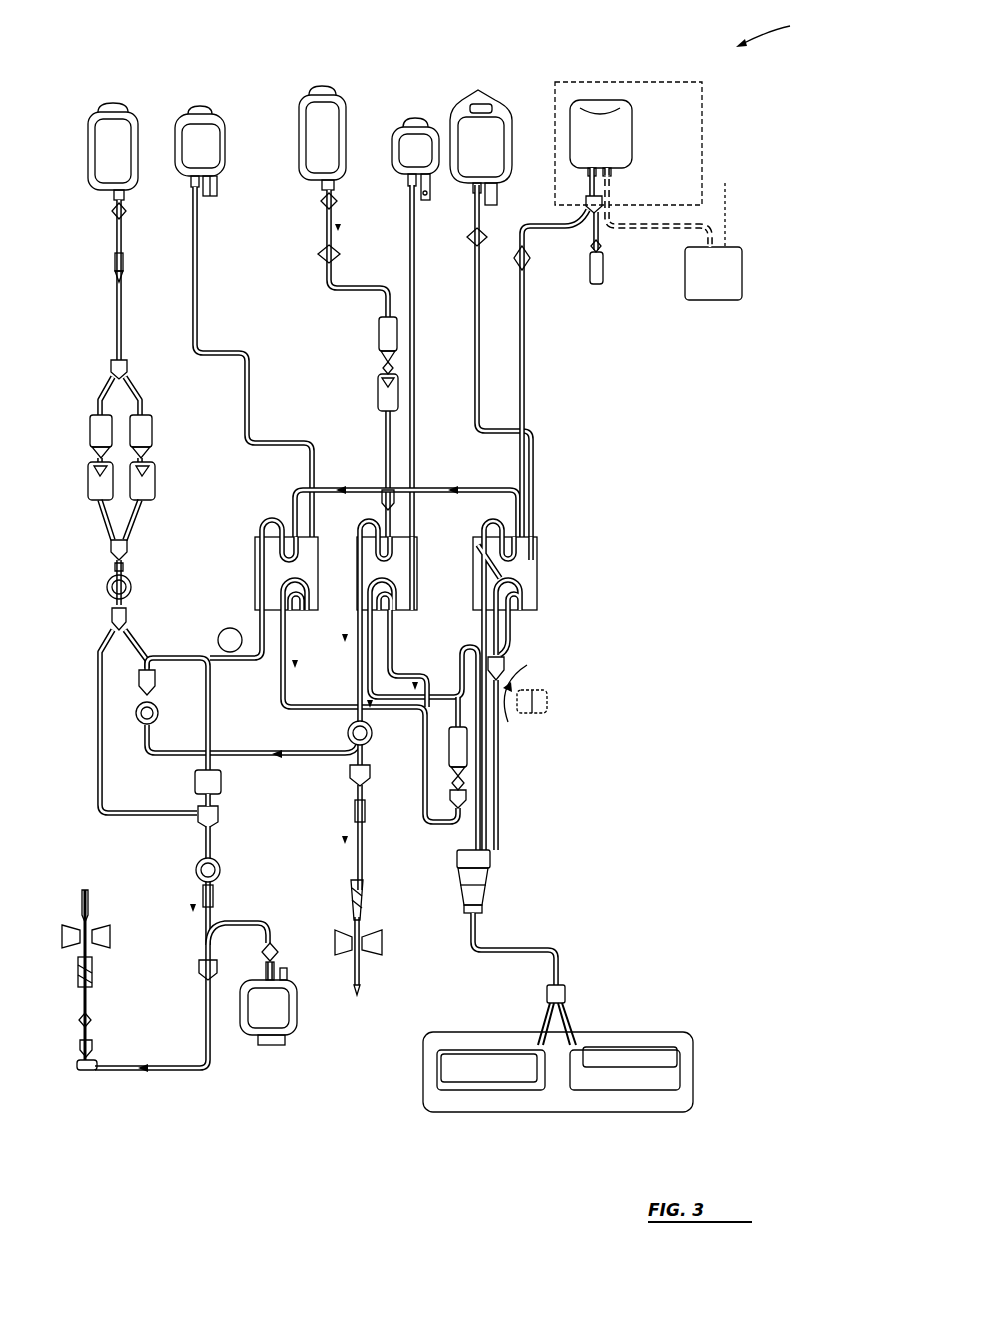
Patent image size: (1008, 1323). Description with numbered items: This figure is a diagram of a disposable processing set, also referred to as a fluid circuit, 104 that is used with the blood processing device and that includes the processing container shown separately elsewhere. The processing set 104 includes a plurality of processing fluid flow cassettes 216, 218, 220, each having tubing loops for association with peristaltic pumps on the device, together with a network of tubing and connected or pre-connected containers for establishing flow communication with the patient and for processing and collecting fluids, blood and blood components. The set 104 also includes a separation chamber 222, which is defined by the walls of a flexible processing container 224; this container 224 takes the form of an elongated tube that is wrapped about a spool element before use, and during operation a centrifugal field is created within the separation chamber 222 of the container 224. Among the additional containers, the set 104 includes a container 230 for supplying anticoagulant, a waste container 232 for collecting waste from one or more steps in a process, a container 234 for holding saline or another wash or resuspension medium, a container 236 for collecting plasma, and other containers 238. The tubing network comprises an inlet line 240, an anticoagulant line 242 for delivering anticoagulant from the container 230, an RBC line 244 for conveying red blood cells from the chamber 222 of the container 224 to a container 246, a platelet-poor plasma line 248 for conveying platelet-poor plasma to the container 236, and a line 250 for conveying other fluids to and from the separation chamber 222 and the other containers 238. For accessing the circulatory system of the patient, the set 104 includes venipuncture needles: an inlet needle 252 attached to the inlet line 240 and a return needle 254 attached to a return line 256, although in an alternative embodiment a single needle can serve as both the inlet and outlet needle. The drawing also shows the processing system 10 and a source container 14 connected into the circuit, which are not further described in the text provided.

The fluid processing system 10 is at (686, 168).
The source container 14 is at (626, 152).
The processing set 104 is at (771, 30).
The processing fluid flow cassette 216 is at (252, 565).
The processing fluid flow cassette 218 is at (417, 548).
The processing fluid flow cassette 220 is at (540, 562).
The separation chamber 222 is at (635, 1050).
The flexible processing container 224 is at (690, 1070).
The container for supplying anticoagulant 230 is at (330, 100).
The waste container 232 is at (216, 128).
The container for holding saline 234 is at (128, 122).
The container for collecting plasma 236 is at (497, 108).
The other containers 238 is at (742, 262).
The inlet line 240 is at (364, 848).
The anticoagulant (AC) line 242 is at (352, 290).
The RBC line 244 is at (416, 446).
The container 246 is at (420, 128).
The platelet-poor plasma (PPP) line 248 is at (480, 322).
The line 250 is at (533, 366).
The inlet needle 252 is at (368, 962).
The return needle 254 is at (82, 915).
The return line 256 is at (208, 1040).